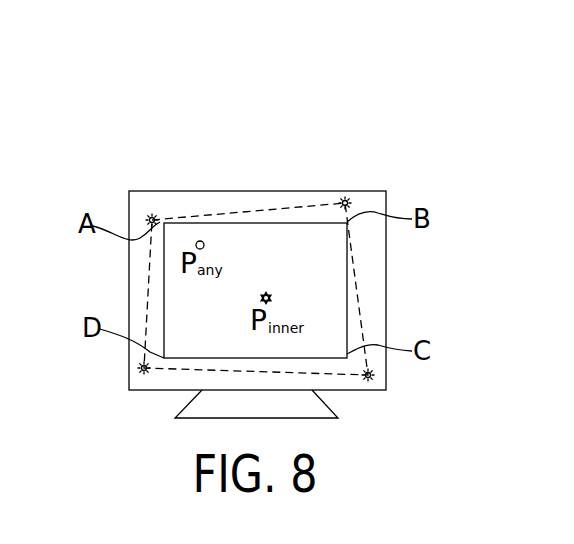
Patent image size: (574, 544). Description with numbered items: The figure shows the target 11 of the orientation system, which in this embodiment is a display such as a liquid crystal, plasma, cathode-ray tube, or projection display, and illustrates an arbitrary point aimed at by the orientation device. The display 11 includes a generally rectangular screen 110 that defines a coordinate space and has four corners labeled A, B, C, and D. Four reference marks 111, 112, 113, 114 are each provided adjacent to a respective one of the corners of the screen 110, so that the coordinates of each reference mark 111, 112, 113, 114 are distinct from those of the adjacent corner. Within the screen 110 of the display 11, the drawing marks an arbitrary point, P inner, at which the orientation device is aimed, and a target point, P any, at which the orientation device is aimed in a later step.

The target 11 is at (247, 191).
The screen 110 is at (281, 238).
The reference mark 111 is at (153, 218).
The reference mark 112 is at (346, 202).
The reference mark 113 is at (369, 377).
The reference mark 114 is at (144, 370).